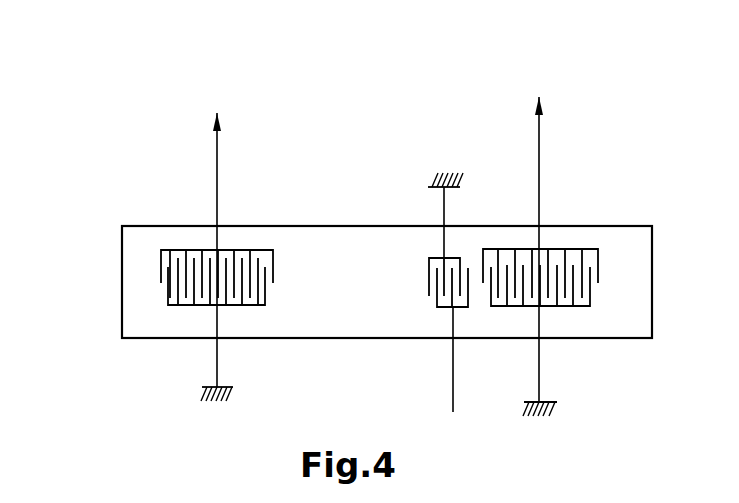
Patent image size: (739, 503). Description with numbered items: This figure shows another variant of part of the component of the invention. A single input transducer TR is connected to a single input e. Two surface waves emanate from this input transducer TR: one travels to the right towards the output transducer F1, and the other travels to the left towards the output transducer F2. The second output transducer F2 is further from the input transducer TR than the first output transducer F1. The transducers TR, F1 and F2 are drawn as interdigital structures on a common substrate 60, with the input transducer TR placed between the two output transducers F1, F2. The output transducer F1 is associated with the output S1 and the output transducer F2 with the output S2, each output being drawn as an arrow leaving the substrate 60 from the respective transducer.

The piezoelectric substrate 60 is at (119, 303).
The first output signal S1 is at (540, 244).
The second output signal S2 is at (217, 244).
The output transducer F1 is at (601, 254).
The output transducer F2 is at (159, 255).
The input transducer TR is at (428, 272).
The input e is at (453, 405).